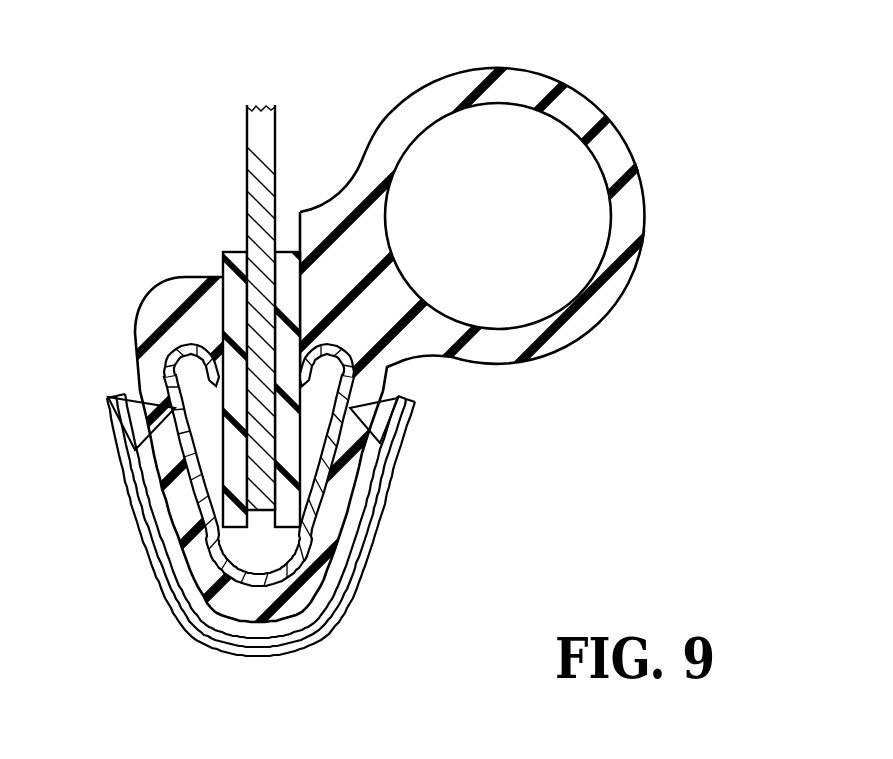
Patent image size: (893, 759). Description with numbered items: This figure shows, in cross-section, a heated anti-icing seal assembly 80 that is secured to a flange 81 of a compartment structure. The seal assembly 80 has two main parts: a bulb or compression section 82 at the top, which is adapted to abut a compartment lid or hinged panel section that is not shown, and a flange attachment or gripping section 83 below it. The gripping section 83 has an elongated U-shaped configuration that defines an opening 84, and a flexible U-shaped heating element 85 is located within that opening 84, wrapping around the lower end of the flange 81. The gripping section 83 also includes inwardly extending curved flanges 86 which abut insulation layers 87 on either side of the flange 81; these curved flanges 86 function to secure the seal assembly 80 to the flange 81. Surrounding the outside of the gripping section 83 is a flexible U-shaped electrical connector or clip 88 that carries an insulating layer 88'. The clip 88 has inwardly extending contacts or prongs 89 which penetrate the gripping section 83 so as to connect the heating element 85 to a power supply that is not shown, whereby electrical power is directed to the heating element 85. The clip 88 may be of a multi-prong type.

The seal assembly 80 is at (446, 379).
The flange 81 is at (247, 162).
The bulb or compression section 82 is at (645, 163).
The flange attachment or gripping section 83 is at (187, 313).
The opening 84 is at (212, 588).
The heating element 85 is at (303, 542).
The inwardly extending curved flanges 86 is at (388, 365).
The insulation layers 87 is at (282, 250).
The electrical connector or clip 88 is at (265, 532).
The insulating layer 88' is at (315, 516).
The contacts or prongs 89 is at (373, 420).